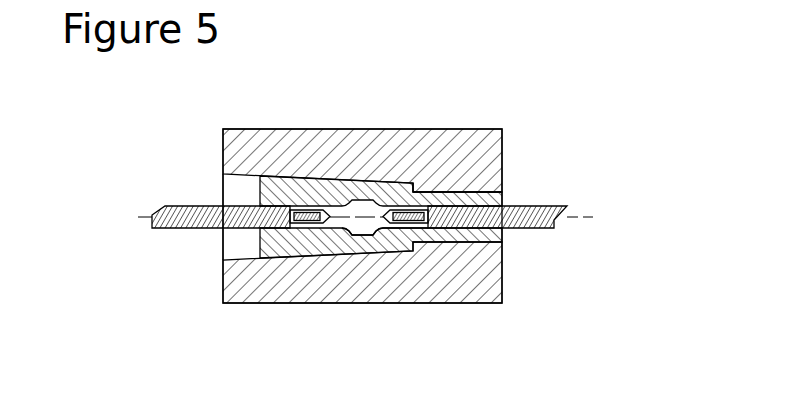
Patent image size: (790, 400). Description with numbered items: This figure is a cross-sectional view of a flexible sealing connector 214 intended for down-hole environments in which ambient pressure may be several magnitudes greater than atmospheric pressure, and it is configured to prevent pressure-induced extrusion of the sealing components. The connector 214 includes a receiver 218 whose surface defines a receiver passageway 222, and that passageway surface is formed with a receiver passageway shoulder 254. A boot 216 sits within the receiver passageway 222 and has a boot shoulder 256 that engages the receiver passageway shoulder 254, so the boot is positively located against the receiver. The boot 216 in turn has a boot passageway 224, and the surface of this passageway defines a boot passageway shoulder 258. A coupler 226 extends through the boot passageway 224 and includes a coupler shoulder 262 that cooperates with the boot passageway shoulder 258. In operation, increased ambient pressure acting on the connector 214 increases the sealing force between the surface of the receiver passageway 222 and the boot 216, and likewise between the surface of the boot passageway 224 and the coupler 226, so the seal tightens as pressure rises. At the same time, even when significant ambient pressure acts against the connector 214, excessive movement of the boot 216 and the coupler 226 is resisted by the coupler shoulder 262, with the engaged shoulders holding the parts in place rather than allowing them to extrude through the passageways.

The connector 214 is at (206, 128).
The boot 216 is at (272, 250).
The receiver 218 is at (270, 145).
The receiver passageway 222 is at (238, 191).
The boot passageway 224 is at (333, 229).
The coupler 226 is at (358, 200).
The receiver passageway shoulder 254 is at (418, 183).
The boot shoulder 256 is at (412, 186).
The boot passageway shoulder 258 is at (396, 237).
The coupler shoulder 262 is at (374, 236).